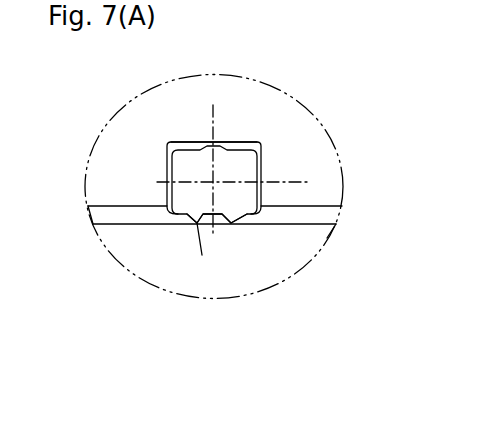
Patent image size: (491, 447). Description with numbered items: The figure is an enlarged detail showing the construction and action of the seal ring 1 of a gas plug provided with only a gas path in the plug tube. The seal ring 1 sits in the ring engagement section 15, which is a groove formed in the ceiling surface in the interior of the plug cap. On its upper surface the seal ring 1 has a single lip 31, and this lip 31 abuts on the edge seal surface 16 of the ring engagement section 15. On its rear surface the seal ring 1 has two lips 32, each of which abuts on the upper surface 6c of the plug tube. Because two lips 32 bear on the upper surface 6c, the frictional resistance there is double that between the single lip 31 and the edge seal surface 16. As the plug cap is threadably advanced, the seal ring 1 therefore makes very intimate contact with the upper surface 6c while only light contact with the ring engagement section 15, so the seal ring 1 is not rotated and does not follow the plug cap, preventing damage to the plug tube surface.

The seal ring 1 is at (250, 170).
The upper surface of the plug tube 6c is at (275, 226).
The ring engagement section 15 is at (257, 148).
The edge seal surface 16 is at (167, 143).
The lip 31 is at (230, 142).
The lips 32 is at (231, 223).